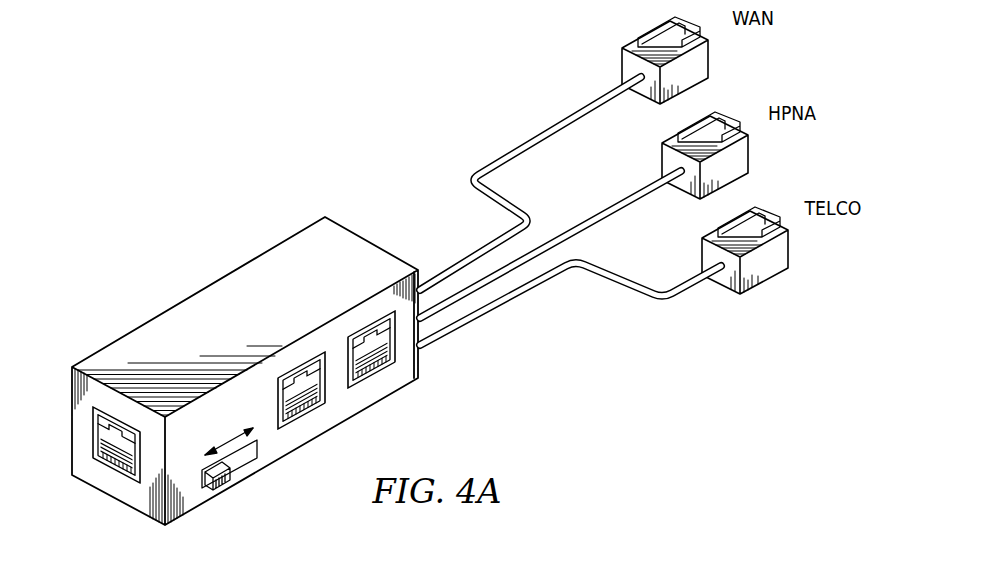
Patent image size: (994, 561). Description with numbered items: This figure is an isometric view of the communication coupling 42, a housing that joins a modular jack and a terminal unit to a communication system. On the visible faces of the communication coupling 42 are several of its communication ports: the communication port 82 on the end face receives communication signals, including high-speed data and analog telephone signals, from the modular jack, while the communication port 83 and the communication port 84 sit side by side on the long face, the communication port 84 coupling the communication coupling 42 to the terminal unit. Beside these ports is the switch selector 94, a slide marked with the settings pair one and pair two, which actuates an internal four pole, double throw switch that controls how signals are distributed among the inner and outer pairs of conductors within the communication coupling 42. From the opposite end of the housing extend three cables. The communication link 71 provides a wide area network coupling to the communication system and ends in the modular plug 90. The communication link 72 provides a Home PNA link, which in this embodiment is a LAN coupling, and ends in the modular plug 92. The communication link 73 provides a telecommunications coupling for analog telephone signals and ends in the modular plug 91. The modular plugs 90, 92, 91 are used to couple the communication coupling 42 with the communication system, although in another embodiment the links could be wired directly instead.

The communication coupling 42 is at (227, 285).
The communication port 82 is at (107, 435).
The communication port 83 is at (310, 372).
The communication port 84 is at (380, 337).
The switch selector 94 is at (237, 460).
The communication link 71 is at (557, 120).
The communication link 72 is at (585, 220).
The communication link 73 is at (688, 280).
The modular plug 90 is at (710, 60).
The modular plug 92 is at (750, 155).
The modular plug 91 is at (790, 248).